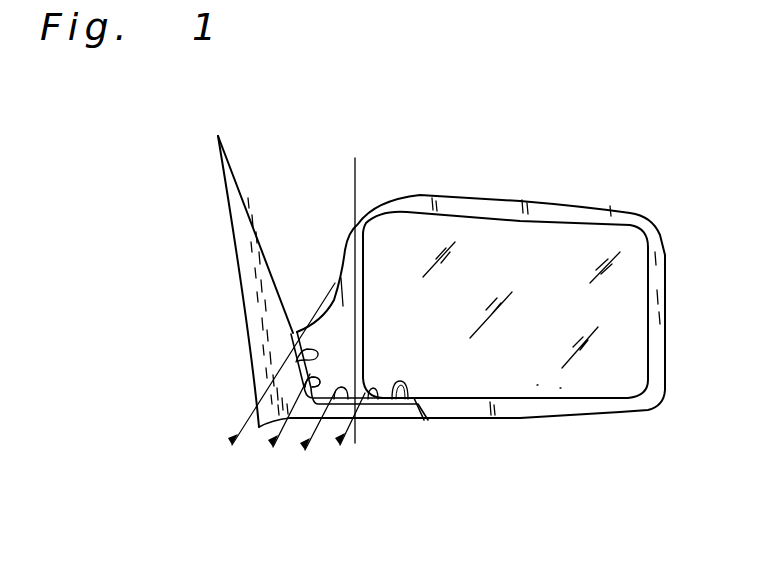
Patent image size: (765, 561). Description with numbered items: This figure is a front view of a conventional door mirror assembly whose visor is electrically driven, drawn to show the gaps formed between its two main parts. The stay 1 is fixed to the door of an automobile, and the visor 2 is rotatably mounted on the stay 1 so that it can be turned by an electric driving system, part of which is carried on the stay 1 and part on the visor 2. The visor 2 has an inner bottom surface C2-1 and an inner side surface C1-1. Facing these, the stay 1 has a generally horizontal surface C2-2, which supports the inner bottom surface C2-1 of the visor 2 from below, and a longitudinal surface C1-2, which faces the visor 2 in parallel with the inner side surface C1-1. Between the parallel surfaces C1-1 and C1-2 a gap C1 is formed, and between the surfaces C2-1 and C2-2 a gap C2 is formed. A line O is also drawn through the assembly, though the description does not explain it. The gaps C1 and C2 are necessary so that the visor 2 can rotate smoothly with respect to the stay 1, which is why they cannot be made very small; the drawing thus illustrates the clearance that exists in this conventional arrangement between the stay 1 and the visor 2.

The stay 1 is at (252, 330).
The visor 2 is at (628, 222).
The center axis O is at (356, 176).
The gap C1 is at (296, 358).
The inner side surface C1-1 is at (293, 333).
The longitudinal surface C1-2 is at (305, 388).
The gap C2 is at (413, 403).
The inner bottom surface C2-1 is at (374, 402).
The horizontal surface C2-2 is at (343, 391).